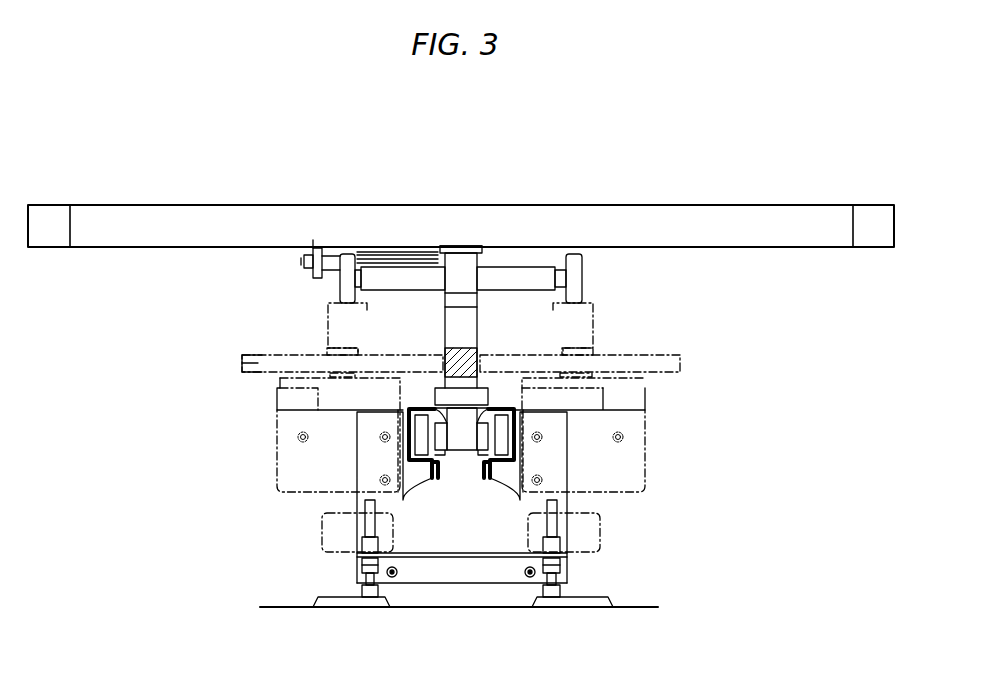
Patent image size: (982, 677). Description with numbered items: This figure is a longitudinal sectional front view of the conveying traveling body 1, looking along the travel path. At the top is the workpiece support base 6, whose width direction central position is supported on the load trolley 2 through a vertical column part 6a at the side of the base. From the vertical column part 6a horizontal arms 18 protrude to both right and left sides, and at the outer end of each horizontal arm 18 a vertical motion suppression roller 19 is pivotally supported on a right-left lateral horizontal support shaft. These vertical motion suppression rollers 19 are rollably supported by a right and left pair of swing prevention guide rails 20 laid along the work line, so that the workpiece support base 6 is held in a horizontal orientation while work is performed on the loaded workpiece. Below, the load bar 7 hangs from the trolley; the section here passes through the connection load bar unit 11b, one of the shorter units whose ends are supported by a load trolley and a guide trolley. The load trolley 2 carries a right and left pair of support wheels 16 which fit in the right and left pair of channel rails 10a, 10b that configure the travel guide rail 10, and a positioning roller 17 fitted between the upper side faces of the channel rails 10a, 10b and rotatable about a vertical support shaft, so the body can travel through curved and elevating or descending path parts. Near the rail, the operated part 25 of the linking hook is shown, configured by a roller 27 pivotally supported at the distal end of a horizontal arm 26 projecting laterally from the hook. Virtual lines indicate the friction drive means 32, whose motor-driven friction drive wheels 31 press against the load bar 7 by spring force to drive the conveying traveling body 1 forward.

The conveying traveling body 1 is at (544, 200).
The load trolley 2 is at (458, 458).
The workpiece support base 6 is at (228, 215).
The vertical column part 6a is at (464, 262).
The load bar 7 is at (461, 341).
The travel guide rail 10 is at (404, 458).
The channel rail 10a is at (407, 450).
The channel rail 10b is at (515, 450).
The connection load bar unit 11b is at (444, 374).
The support wheel 16 is at (423, 456).
The positioning roller 17 is at (470, 392).
The horizontal arm 18 is at (413, 268).
The vertical motion suppression roller 19 is at (350, 262).
The swing prevention guide rail 20 is at (327, 306).
The operated part 25 is at (311, 242).
The horizontal arm 26 is at (323, 248).
The roller 27 is at (298, 262).
The friction drive wheel 31 is at (242, 362).
The friction drive means 32 is at (272, 425).